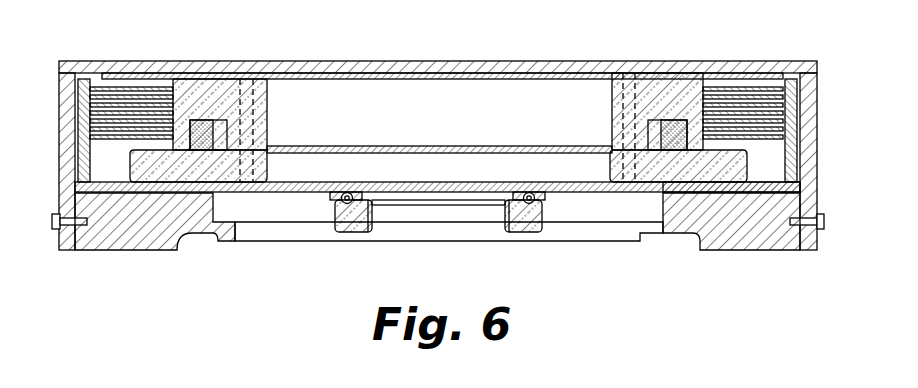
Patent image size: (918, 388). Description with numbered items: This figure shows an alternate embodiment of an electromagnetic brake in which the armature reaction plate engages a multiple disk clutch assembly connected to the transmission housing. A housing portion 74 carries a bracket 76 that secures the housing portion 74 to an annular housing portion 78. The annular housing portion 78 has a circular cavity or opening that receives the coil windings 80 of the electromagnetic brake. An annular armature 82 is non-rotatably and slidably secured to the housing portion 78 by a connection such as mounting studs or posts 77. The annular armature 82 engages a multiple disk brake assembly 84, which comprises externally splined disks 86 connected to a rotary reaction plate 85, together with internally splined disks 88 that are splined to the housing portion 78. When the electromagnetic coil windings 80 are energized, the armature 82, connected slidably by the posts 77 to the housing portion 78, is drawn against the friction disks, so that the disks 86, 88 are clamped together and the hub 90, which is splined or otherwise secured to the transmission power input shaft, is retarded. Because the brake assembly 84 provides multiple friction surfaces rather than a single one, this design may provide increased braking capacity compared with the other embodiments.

The housing portion 74 is at (740, 226).
The bracket 76 is at (818, 125).
The mounting studs or posts 77 is at (469, 109).
The annular housing portion 78 is at (653, 98).
The coil windings 80 is at (670, 128).
The annular armature 82 is at (617, 162).
The multiple disk brake assembly 84 is at (750, 96).
The rotary reaction plate 85 is at (573, 183).
The externally splined disks 86 is at (760, 128).
The internally splined disks 88 is at (798, 190).
The hub 90 is at (357, 212).